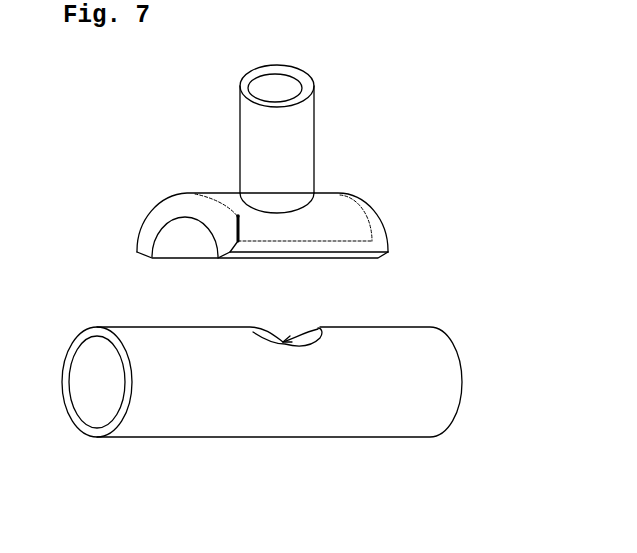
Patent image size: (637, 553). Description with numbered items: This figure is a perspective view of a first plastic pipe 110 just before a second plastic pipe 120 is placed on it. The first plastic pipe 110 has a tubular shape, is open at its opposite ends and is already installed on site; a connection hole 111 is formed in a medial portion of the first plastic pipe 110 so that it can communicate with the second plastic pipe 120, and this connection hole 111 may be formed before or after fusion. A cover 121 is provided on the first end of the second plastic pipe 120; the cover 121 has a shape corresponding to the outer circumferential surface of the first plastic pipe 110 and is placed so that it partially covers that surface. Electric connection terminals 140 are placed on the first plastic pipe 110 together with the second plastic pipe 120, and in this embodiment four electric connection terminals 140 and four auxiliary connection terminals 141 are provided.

The first plastic pipe 110 is at (243, 417).
The connection hole 111 is at (286, 341).
The second plastic pipe 120 is at (293, 140).
The cover 121 is at (368, 206).
The electric connection terminals 140 is at (224, 208).
The auxiliary connection terminals 141 is at (237, 217).